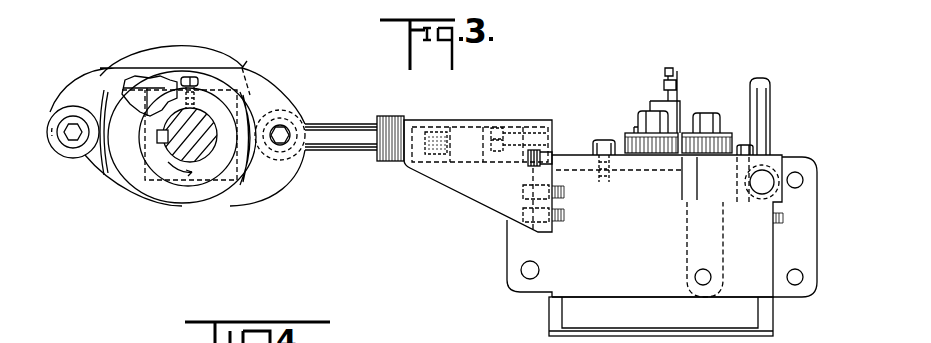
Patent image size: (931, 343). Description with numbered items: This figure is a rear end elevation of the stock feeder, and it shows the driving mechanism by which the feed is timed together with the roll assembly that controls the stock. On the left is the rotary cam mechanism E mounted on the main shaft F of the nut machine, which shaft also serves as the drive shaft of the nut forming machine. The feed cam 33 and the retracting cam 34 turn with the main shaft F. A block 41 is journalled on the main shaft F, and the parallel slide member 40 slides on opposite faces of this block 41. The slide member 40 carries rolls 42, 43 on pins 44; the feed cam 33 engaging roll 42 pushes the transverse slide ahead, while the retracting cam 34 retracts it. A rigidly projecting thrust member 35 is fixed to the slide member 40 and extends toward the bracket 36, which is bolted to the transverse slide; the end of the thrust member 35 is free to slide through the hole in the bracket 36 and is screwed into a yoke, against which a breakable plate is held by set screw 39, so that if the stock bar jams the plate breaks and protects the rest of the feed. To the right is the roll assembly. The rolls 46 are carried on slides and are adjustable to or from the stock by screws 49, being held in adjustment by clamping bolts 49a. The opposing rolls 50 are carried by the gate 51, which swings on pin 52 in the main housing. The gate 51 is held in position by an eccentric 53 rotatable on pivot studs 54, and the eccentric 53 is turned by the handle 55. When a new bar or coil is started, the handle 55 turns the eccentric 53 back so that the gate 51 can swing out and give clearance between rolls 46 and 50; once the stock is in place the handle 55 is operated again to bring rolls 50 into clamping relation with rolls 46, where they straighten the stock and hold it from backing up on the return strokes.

The feed cam 33 is at (185, 48).
The retracting cam 34 is at (123, 162).
The thrust member 35 is at (340, 127).
The bracket 36 is at (457, 182).
The set screw 39 is at (499, 125).
The parallel slide member 40 is at (87, 77).
The block 41 is at (152, 98).
The roll 42 is at (279, 172).
The roll 43 is at (62, 152).
The pins 44 is at (74, 140).
The rolls 46 is at (634, 131).
The screws 49 is at (530, 162).
The clamping bolts 49a is at (594, 142).
The rolls 50 is at (730, 132).
The gate 51 is at (724, 240).
The pin 52 is at (712, 278).
The eccentric 53 is at (758, 197).
The pivot studs 54 is at (770, 190).
The handle 55 is at (770, 106).
The rotary cam mechanism E is at (249, 66).
The main shaft F is at (203, 150).